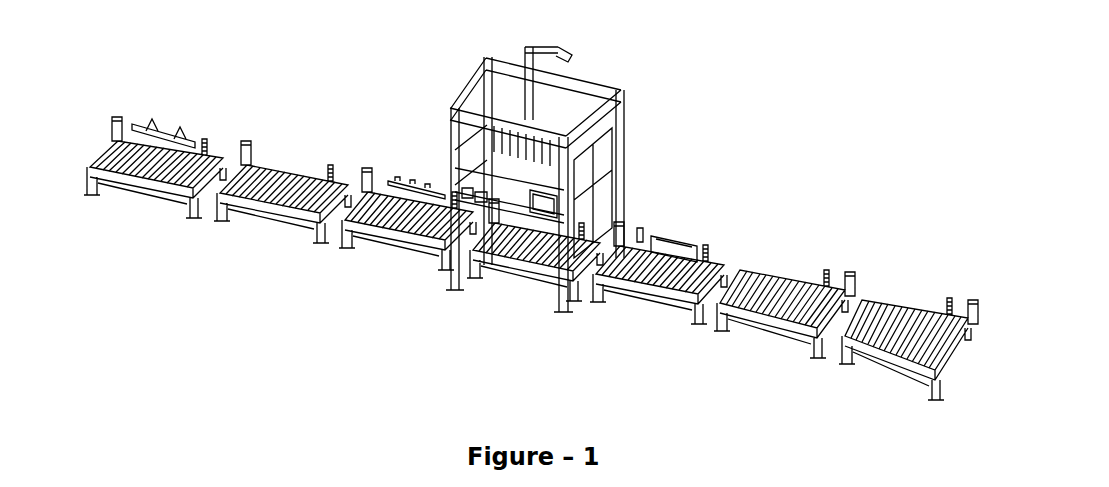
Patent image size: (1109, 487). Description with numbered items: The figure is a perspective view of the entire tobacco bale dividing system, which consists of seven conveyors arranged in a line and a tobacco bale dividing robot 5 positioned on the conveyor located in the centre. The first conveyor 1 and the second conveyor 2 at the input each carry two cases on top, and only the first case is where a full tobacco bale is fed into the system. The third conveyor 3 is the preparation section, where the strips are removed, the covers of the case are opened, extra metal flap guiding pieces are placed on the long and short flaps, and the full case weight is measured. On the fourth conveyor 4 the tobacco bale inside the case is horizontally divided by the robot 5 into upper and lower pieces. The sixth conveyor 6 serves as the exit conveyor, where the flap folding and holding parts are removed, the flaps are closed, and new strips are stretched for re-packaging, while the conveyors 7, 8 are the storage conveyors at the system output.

The first conveyor 1 is at (148, 195).
The second conveyor 2 is at (270, 225).
The third conveyor 3 is at (383, 248).
The fourth conveyor 4 is at (520, 277).
The tobacco bale dividing robot 5 is at (568, 73).
The sixth conveyor 6 is at (638, 303).
The sixth conveyor 7 is at (753, 330).
The seventh conveyor 8 is at (880, 357).